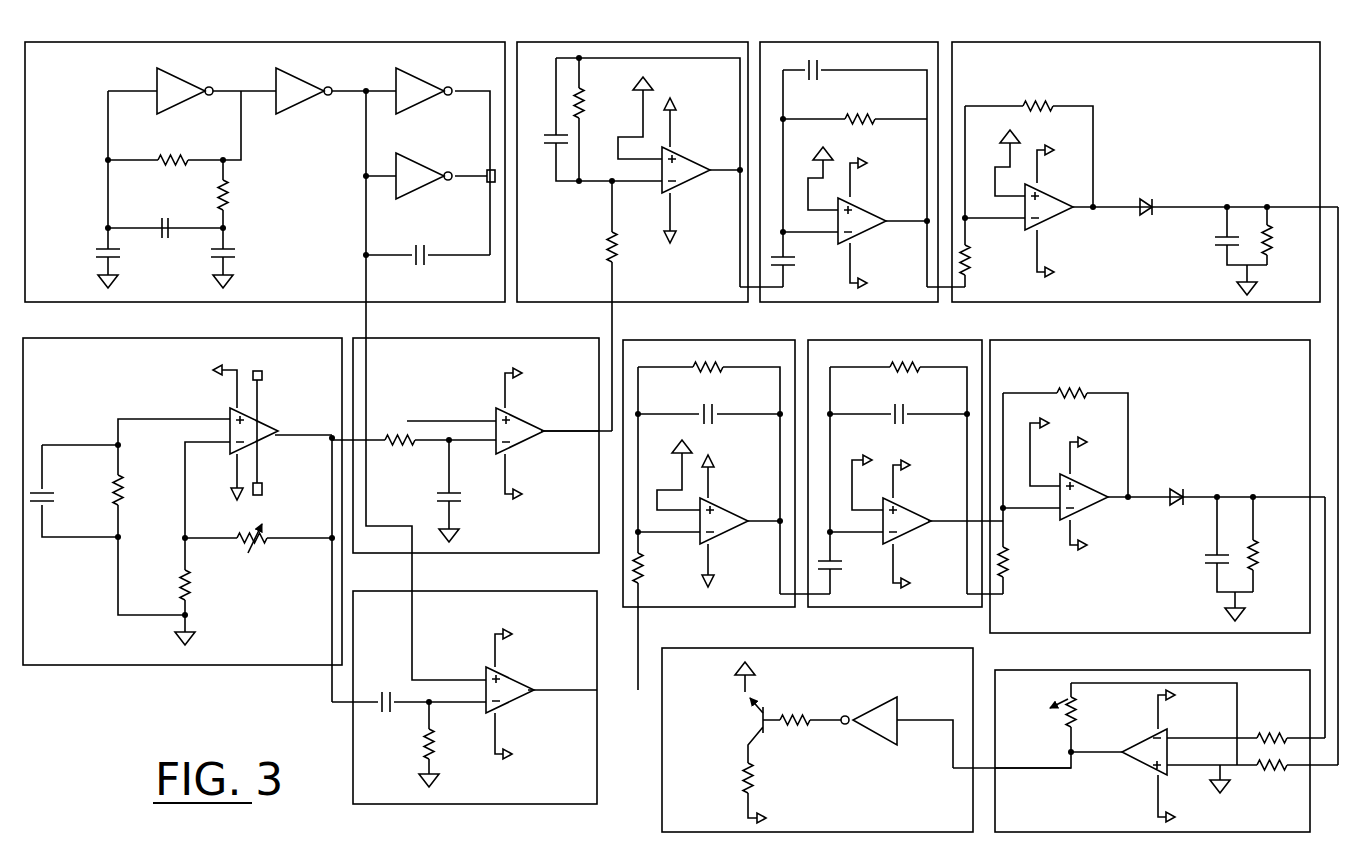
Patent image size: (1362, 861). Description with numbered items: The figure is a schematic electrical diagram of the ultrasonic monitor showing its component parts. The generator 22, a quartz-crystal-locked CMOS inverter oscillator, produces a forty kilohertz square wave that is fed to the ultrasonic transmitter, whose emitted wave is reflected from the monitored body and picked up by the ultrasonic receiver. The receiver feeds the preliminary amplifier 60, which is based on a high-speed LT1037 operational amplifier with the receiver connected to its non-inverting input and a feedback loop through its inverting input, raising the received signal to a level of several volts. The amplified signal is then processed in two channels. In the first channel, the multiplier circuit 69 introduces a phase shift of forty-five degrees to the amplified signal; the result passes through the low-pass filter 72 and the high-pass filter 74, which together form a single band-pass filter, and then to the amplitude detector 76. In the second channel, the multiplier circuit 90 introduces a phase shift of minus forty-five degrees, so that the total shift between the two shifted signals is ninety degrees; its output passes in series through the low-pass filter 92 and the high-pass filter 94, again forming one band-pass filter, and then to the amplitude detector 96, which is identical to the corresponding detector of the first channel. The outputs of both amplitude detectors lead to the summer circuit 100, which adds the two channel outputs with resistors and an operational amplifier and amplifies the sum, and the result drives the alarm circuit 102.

The generator 22 is at (203, 40).
The low-pass filter (LPF1) 72 is at (590, 38).
The high-pass filter (HPF1) 74 is at (818, 38).
The amplitude detector (AR1) 76 is at (1053, 38).
The preliminary amplifier 60 is at (187, 668).
The multiplier circuit (M1) 69 is at (526, 336).
The multiplier circuit (M2) 90 is at (351, 727).
The low-pass filter (LPF2) 92 is at (755, 338).
The high-pass filter (HPF2) 94 is at (942, 338).
The amplitude detector (AR2) 96 is at (1213, 338).
The alarm circuit 102 is at (887, 647).
The summer circuit or adder 100 is at (1213, 668).